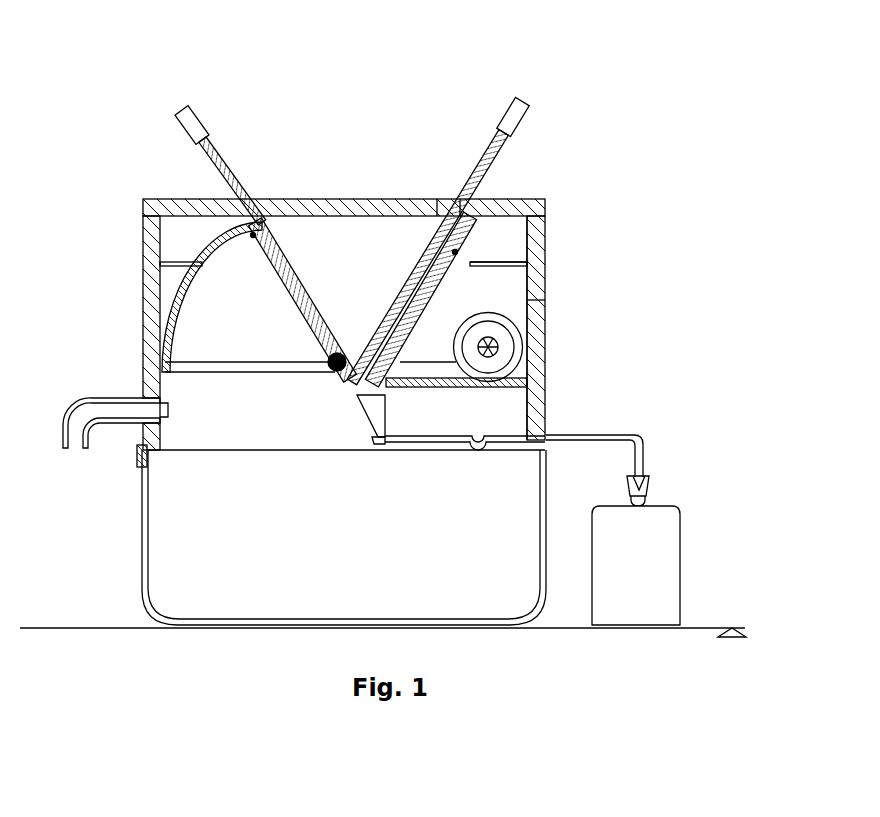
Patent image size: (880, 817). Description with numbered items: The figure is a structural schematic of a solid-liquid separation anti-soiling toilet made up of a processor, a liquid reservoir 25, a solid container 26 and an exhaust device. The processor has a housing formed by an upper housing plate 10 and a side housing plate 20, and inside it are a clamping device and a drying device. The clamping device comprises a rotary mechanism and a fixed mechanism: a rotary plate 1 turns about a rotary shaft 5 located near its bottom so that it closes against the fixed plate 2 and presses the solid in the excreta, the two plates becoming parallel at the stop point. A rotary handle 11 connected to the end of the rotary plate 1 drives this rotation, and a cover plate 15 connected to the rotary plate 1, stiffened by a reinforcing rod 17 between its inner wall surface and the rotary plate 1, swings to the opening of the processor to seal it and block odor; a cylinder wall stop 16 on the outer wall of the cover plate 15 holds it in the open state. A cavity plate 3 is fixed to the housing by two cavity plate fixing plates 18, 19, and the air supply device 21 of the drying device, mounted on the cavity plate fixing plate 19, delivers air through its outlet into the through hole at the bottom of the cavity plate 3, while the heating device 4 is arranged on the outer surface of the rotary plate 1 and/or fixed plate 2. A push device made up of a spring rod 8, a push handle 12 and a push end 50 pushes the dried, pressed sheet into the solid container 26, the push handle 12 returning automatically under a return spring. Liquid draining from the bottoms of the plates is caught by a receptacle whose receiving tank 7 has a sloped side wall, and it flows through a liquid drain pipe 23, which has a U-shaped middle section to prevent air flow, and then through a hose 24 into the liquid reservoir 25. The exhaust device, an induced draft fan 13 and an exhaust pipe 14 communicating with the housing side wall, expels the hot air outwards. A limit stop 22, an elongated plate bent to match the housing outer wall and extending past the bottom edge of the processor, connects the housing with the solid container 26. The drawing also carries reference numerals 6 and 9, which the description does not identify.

The rotary plate 1 is at (333, 340).
The fixed plate 2 is at (440, 265).
The cavity plate 3 is at (497, 200).
The heating device 4 is at (280, 248).
The rotary shaft 5 is at (337, 355).
The second crushing rod 6 is at (420, 275).
The receiving tank 7 is at (388, 408).
The spring rod 8 is at (492, 225).
The guide opening 9 is at (470, 216).
The upper housing plate 10 is at (545, 198).
The rotary handle 11 is at (240, 196).
The push handle 12 is at (485, 222).
The induced draft fan 13 is at (157, 410).
The exhaust pipe 14 is at (90, 396).
The cover plate 15 is at (245, 222).
The cylinder wall stop 16 is at (185, 262).
The reinforcing rod 17 is at (260, 373).
The cavity plate fixing plate 18 is at (545, 237).
The cavity plate fixing plate 19 is at (515, 355).
The side housing plate 20 is at (545, 261).
The air supply device 21 is at (545, 297).
The limit stop 22 is at (140, 432).
The liquid drain pipe 23 is at (548, 436).
The hose 24 is at (645, 462).
The liquid reservoir 25 is at (674, 520).
The solid container 26 is at (146, 548).
The push end 50 is at (442, 200).